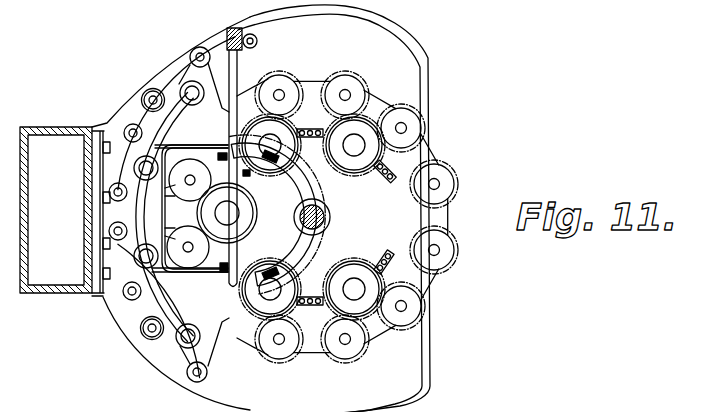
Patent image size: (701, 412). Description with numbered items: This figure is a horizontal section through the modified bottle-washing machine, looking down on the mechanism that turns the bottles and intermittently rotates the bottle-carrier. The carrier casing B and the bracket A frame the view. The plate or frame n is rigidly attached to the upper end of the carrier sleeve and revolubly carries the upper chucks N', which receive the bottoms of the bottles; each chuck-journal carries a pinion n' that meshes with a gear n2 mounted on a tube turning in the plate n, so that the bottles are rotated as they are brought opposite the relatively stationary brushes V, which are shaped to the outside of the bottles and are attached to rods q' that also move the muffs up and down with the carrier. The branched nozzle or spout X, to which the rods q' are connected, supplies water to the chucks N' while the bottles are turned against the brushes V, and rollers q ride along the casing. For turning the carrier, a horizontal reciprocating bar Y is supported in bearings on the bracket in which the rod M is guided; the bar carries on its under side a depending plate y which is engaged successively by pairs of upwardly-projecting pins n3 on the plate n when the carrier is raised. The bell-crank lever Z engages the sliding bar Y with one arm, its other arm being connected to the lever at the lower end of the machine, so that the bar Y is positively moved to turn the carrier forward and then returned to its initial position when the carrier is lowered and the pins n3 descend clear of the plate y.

The bracket frame A is at (56, 210).
The casing B is at (261, 208).
The bell-crank lever Z is at (233, 28).
The brushes V is at (133, 166).
The rollers q is at (133, 216).
The rods q' is at (188, 223).
The branched nozzle or spout X is at (206, 208).
The horizontal reciprocating bar Y is at (274, 214).
The depending plate y is at (249, 176).
The rod M is at (323, 207).
The pinions n' is at (347, 208).
The upper chucks N' is at (370, 230).
The plate or frame n is at (418, 245).
The gears n2 is at (376, 153).
The upwardly-projecting pins n3 is at (318, 129).